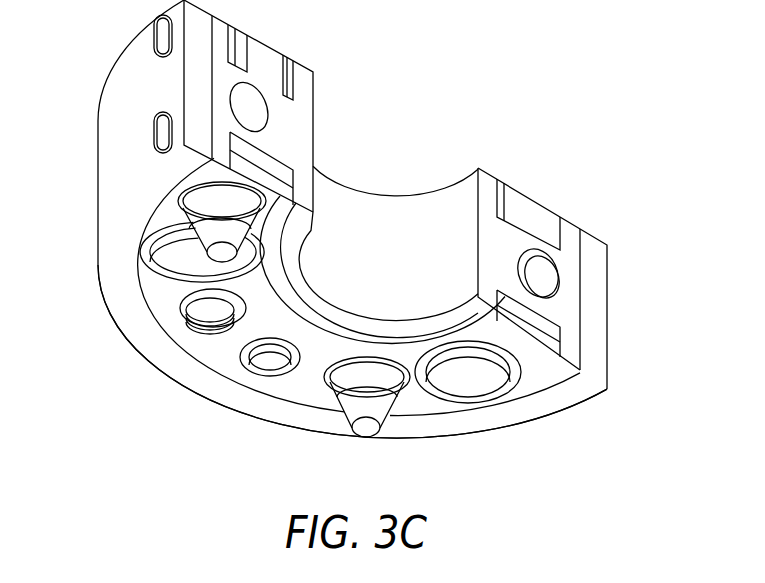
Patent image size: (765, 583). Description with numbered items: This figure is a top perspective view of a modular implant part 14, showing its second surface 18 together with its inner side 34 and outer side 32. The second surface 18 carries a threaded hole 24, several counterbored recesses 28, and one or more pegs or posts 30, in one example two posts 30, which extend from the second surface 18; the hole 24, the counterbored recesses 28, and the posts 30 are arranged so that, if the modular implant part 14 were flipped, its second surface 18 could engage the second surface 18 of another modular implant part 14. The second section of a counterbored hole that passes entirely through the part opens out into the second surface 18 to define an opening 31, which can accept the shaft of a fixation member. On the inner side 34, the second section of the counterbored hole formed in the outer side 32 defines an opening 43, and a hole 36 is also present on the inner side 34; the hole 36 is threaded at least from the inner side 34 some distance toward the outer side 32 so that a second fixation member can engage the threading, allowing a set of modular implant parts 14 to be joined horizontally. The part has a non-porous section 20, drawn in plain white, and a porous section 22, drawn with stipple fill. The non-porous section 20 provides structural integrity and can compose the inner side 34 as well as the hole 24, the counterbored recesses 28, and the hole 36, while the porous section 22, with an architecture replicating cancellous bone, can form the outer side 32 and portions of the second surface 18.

The modular implant part 14 is at (488, 70).
The second surface 18 is at (447, 430).
The non-porous section 20 is at (572, 318).
The porous section 22 is at (567, 393).
The threaded hole 24 is at (193, 335).
The counterbored recesses 28 is at (160, 255).
The posts 30 is at (203, 210).
The opening 31 is at (264, 362).
The outer side 32 is at (108, 152).
The inner side 34 is at (370, 210).
The hole 36 is at (553, 263).
The opening 43 is at (252, 110).